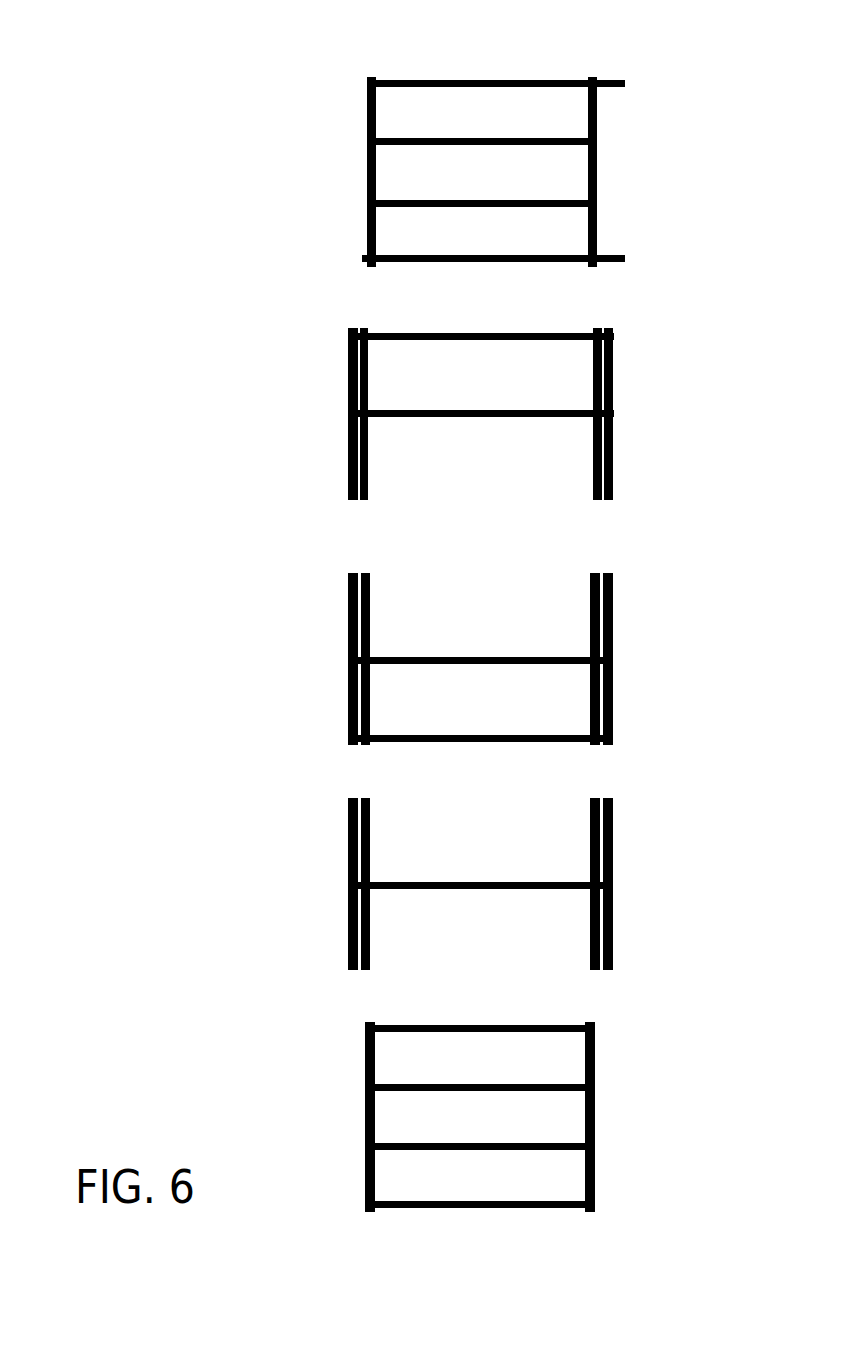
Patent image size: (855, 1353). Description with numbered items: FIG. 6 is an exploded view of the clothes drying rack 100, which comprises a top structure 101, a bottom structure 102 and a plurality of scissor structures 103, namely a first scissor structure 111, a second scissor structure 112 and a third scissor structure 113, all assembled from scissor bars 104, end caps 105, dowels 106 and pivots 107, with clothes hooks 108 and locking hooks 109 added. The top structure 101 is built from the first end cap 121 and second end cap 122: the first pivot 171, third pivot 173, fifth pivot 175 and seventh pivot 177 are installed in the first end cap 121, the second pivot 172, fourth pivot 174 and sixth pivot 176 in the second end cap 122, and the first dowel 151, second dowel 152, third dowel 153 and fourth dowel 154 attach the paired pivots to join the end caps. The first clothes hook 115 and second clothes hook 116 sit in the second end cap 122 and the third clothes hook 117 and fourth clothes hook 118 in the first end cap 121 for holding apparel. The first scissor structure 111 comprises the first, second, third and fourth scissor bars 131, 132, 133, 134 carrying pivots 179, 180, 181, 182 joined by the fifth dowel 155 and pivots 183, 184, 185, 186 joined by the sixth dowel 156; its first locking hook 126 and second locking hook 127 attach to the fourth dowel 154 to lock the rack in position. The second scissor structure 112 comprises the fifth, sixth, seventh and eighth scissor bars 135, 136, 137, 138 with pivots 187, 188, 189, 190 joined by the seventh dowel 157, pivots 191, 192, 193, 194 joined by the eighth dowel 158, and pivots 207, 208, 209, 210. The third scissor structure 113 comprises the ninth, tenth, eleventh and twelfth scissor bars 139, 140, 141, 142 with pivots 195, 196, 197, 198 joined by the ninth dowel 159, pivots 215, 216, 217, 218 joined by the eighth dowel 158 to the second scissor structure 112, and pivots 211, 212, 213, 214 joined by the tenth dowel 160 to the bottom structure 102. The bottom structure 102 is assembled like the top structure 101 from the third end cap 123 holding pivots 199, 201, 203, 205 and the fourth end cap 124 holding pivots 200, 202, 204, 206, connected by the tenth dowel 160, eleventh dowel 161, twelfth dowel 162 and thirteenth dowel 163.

The clothes drying rack 100 is at (90, 74).
The top structure 101 is at (150, 192).
The bottom structure 102 is at (148, 1066).
The plurality of scissor structures 103 is at (130, 382).
The plurality of scissor bars 104 is at (608, 328).
The plurality of end caps 105 is at (597, 155).
The plurality of dowels 106 is at (530, 735).
The plurality of pivots 107 is at (367, 100).
The plurality of clothes hooks 108 is at (367, 258).
The plurality of locking hooks 109 is at (372, 488).
The first scissor structure 111 is at (150, 431).
The second scissor structure 112 is at (152, 691).
The third scissor structure 113 is at (152, 921).
The first clothes hook 115 is at (622, 86).
The second clothes hook 116 is at (605, 260).
The third clothes hook 117 is at (365, 258).
The fourth clothes hook 118 is at (367, 83).
The first end cap 121 is at (376, 170).
The second end cap 122 is at (597, 165).
The third end cap 123 is at (365, 1110).
The fourth end cap 124 is at (595, 1115).
The first locking hook 126 is at (372, 486).
The second locking hook 127 is at (590, 482).
The first scissor bar 131 is at (348, 365).
The second scissor bar 132 is at (348, 455).
The third scissor bar 133 is at (614, 432).
The fourth scissor bar 134 is at (614, 470).
The fifth scissor bar 135 is at (348, 608).
The sixth scissor bar 136 is at (348, 700).
The seventh scissor bar 137 is at (613, 598).
The eighth scissor bar 138 is at (613, 628).
The ninth scissor bar 139 is at (348, 830).
The tenth scissor bar 140 is at (348, 920).
The eleventh scissor bar 141 is at (613, 845).
The twelfth scissor bar 142 is at (613, 862).
The first dowel 151 is at (470, 80).
The second dowel 152 is at (485, 122).
The third dowel 153 is at (495, 200).
The fourth dowel 154 is at (480, 262).
The fifth dowel 155 is at (418, 333).
The sixth dowel 156 is at (480, 413).
The seventh dowel 157 is at (480, 657).
The eighth dowel 158 is at (430, 735).
The ninth dowel 159 is at (485, 882).
The tenth dowel 160 is at (495, 1025).
The eleventh dowel 161 is at (450, 1084).
The twelfth dowel 162 is at (495, 1143).
The thirteenth dowel 163 is at (450, 1201).
The first pivot 171 is at (372, 78).
The second pivot 172 is at (597, 78).
The third pivot 173 is at (385, 140).
The fourth pivot 174 is at (588, 141).
The fifth pivot 175 is at (380, 205).
The sixth pivot 176 is at (597, 192).
The seventh pivot 177 is at (380, 258).
The ninth pivot 179 is at (605, 263).
The tenth pivot 180 is at (372, 328).
The eleventh pivot 181 is at (593, 330).
The twelfth pivot 182 is at (614, 336).
The thirteenth pivot 183 is at (348, 413).
The fourteenth pivot 184 is at (368, 375).
The fifteenth pivot 185 is at (593, 413).
The sixteenth pivot 186 is at (614, 400).
The seventeenth pivot 187 is at (348, 660).
The eighteenth pivot 188 is at (370, 622).
The nineteenth pivot 189 is at (613, 682).
The twentieth pivot 190 is at (613, 660).
The twenty first pivot 191 is at (348, 742).
The twenty second pivot 192 is at (370, 745).
The twenty third pivot 193 is at (590, 745).
The twenty fourth pivot 194 is at (613, 738).
The twenty fifth pivot 195 is at (348, 885).
The twenty sixth pivot 196 is at (370, 870).
The twenty seventh pivot 197 is at (590, 887).
The twenty eighth pivot 198 is at (613, 895).
The twenty ninth pivot 199 is at (367, 1028).
The thirtieth pivot 200 is at (595, 1033).
The thirty first pivot 201 is at (365, 1085).
The thirty second pivot 202 is at (595, 1075).
The thirty third pivot 203 is at (365, 1145).
The thirty fourth pivot 204 is at (595, 1147).
The thirty fifth pivot 205 is at (370, 1212).
The thirty sixth pivot 206 is at (595, 1205).
The thirty seventh pivot 207 is at (348, 585).
The thirty eighth pivot 208 is at (370, 575).
The thirty ninth pivot 209 is at (595, 575).
The fortieth pivot 210 is at (613, 580).
The forty first pivot 211 is at (348, 812).
The forty second pivot 212 is at (370, 808).
The forty third pivot 213 is at (590, 808).
The forty fourth pivot 214 is at (613, 812).
The forty fifth pivot 215 is at (352, 960).
The forty sixth pivot 216 is at (370, 962).
The forty seventh pivot 217 is at (590, 965).
The forty eighth pivot 218 is at (613, 970).